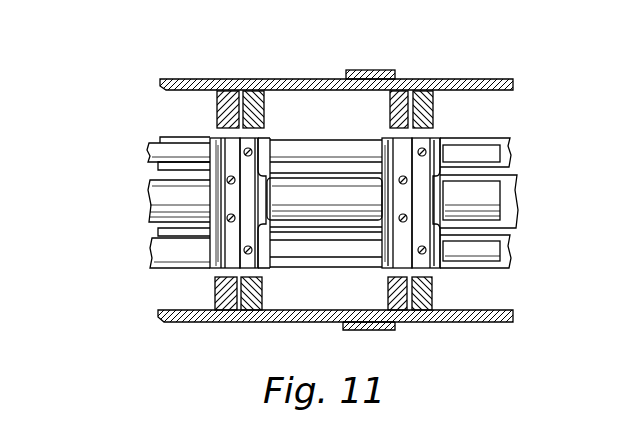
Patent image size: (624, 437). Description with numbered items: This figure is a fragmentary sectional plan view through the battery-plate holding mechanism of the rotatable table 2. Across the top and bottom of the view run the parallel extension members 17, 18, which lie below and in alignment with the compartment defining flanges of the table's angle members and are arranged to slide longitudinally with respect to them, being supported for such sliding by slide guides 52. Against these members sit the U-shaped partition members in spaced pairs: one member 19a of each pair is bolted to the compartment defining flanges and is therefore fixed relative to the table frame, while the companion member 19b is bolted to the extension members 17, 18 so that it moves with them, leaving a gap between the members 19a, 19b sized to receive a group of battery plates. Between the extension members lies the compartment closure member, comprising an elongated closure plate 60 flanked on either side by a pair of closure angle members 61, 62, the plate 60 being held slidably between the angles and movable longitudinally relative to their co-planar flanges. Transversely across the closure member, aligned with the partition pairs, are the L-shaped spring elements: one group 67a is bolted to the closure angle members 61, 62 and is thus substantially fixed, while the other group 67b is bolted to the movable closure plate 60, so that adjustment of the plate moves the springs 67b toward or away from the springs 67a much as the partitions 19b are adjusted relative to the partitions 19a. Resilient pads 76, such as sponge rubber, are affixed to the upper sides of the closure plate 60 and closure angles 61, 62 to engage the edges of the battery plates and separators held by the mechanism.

The table 2 is at (302, 76).
The extension member 17 is at (445, 322).
The extension member 18 is at (478, 79).
The U-shaped partition member 19a is at (228, 118).
The U-shaped partition member 19b is at (255, 113).
The slide guide 52 is at (378, 72).
The closure plate 60 is at (512, 207).
The closure angle member 61 is at (500, 165).
The closure angle member 62 is at (505, 262).
The L-shaped spring element 67a is at (212, 268).
The L-shaped spring element 67b is at (265, 266).
The pad 76 is at (158, 193).